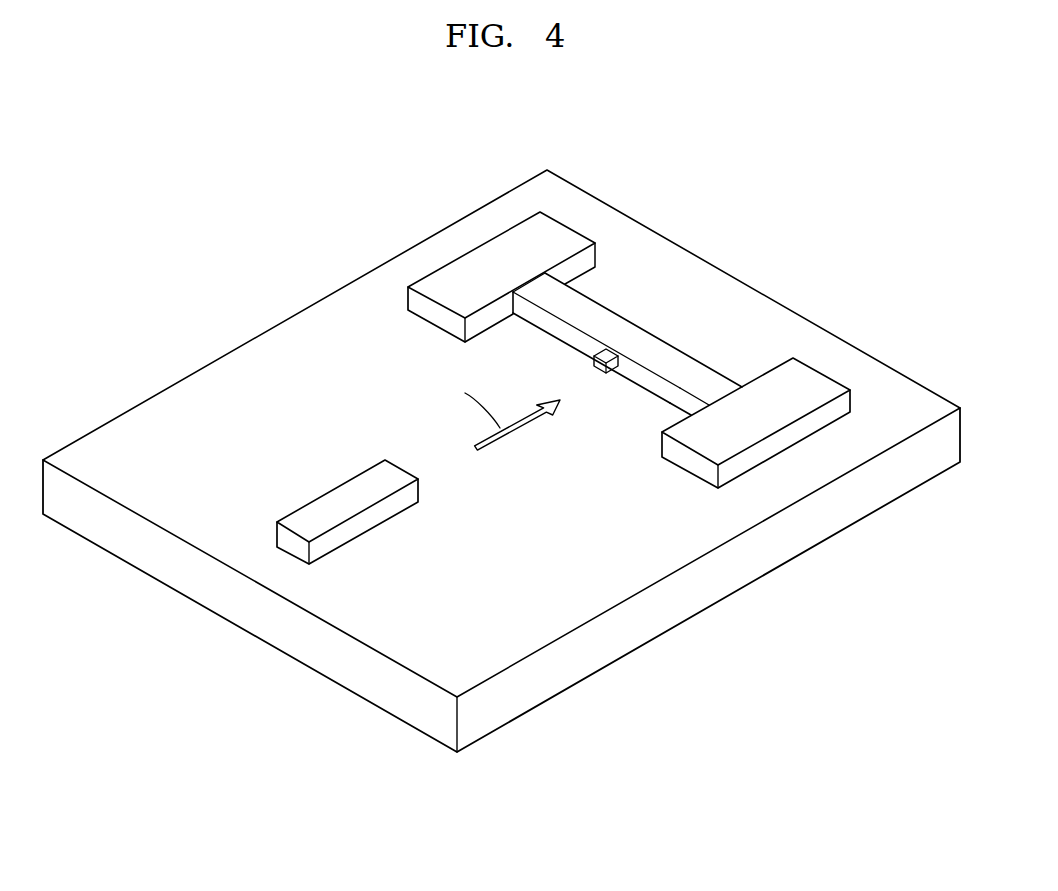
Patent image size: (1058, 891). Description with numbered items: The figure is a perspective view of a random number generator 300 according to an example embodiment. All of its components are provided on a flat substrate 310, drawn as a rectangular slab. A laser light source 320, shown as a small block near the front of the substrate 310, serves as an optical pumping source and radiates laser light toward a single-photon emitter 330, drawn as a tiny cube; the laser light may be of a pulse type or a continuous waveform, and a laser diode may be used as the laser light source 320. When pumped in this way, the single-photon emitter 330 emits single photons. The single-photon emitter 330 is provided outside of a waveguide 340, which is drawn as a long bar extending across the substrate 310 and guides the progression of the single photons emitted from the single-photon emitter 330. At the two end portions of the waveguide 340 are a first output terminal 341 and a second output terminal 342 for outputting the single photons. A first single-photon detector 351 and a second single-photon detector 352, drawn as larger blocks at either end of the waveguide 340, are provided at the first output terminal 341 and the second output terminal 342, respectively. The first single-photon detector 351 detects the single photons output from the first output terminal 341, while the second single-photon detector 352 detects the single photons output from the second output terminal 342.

The random number generator 300 is at (828, 204).
The substrate 310 is at (705, 602).
The laser light source 320 is at (332, 491).
The single-photon emitter 330 is at (597, 377).
The waveguide 340 is at (643, 335).
The first output terminal 341 is at (548, 272).
The second output terminal 342 is at (733, 390).
The first single-photon detector 351 is at (563, 232).
The second single-photon detector 352 is at (818, 380).